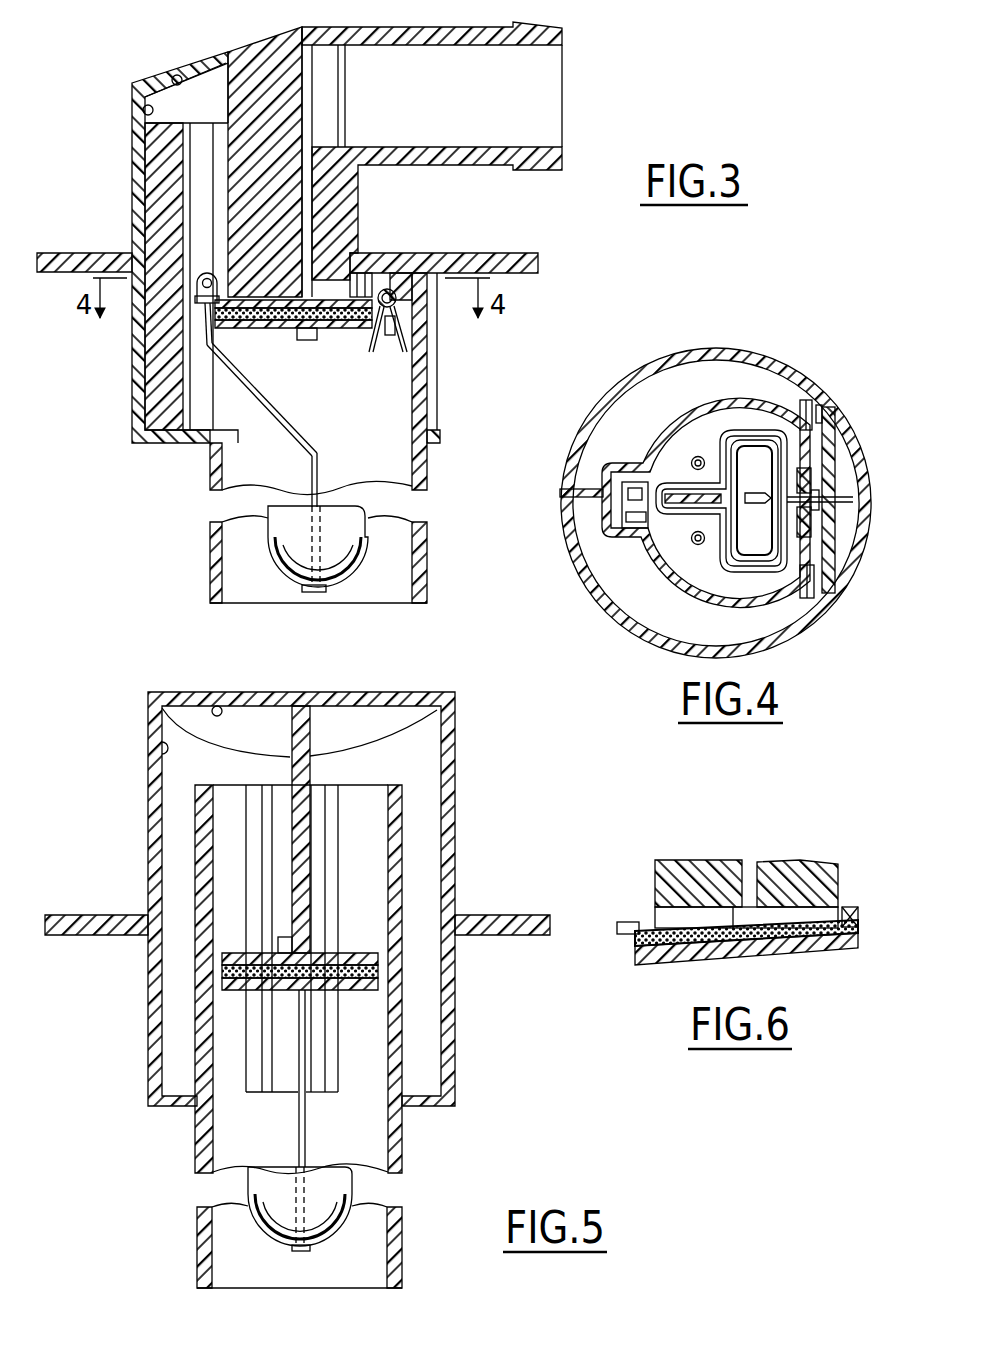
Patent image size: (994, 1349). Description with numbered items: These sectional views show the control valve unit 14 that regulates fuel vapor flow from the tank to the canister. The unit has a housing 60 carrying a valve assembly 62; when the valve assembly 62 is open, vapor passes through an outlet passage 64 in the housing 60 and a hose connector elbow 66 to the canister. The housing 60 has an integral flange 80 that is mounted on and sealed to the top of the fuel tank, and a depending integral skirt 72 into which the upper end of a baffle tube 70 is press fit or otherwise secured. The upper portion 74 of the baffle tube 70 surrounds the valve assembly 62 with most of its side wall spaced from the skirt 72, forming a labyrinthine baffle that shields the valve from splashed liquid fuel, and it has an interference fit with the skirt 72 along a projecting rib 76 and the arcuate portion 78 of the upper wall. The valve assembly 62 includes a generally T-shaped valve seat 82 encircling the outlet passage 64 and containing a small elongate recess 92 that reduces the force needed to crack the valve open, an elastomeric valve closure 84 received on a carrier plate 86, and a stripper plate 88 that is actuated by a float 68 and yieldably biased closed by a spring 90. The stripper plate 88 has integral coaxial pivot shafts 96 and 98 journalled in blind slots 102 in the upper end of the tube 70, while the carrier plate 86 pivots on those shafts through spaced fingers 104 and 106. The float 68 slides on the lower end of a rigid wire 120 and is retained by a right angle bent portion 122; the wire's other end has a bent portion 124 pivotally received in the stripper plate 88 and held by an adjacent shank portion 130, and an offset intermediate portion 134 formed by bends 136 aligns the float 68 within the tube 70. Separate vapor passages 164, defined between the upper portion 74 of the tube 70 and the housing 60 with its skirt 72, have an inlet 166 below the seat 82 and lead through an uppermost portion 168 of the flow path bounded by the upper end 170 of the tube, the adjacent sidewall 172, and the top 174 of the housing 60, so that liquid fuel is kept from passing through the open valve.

In FIG. 3, the control valve unit 14 is at (100, 92).
In FIG. 3, the housing 60 is at (221, 52).
In FIG. 3, the valve assembly 62 is at (331, 365).
In FIG. 3, the outlet passage 64 is at (313, 213).
In FIG. 4, the outlet passage 64 is at (765, 440).
In FIG. 6, the outlet passage 64 is at (749, 868).
In FIG. 3, the hose connector elbow 66 is at (523, 170).
In FIG. 3, the float 68 is at (288, 575).
In FIG. 5, the float 68 is at (347, 1198).
In FIG. 3, the baffle tube 70 is at (428, 558).
In FIG. 5, the baffle tube 70 is at (409, 1136).
In FIG. 3, the depending integral skirt 72 is at (440, 410).
In FIG. 4, the upper portion of the baffle tube 74 is at (667, 434).
In FIG. 5, the upper portion of the baffle tube 74 is at (402, 878).
In FIG. 3, the projecting rib 76 is at (133, 200).
In FIG. 4, the projecting rib 76 is at (562, 493).
In FIG. 4, the arcuate portion of the upper wall 78 is at (838, 470).
In FIG. 3, the flange 80 is at (520, 257).
In FIG. 5, the flange 80 is at (80, 926).
In FIG. 4, the valve seat 82 is at (748, 430).
In FIG. 3, the elastomeric valve closure 84 is at (255, 328).
In FIG. 4, the elastomeric valve closure 84 is at (738, 543).
In FIG. 5, the elastomeric valve closure 84 is at (300, 957).
In FIG. 6, the elastomeric valve closure 84 is at (860, 935).
In FIG. 3, the carrier plate 86 is at (350, 333).
In FIG. 5, the carrier plate 86 is at (366, 991).
In FIG. 6, the carrier plate 86 is at (760, 952).
In FIG. 3, the stripper plate 88 is at (362, 280).
In FIG. 4, the stripper plate 88 is at (705, 565).
In FIG. 6, the stripper plate 88 is at (852, 907).
In FIG. 3, the spring 90 is at (406, 355).
In FIG. 4, the spring 90 is at (854, 498).
In FIG. 3, the recess 92 is at (252, 300).
In FIG. 6, the recess 92 is at (660, 905).
In FIG. 4, the pivot shaft 96 is at (822, 598).
In FIG. 4, the pivot shaft 98 is at (805, 440).
In FIG. 3, the blind slots 102 is at (393, 270).
In FIG. 4, the blind slots 102 is at (814, 412).
In FIG. 3, the finger 104 is at (375, 280).
In FIG. 4, the finger 104 is at (822, 452).
In FIG. 4, the finger 106 is at (836, 522).
In FIG. 3, the rigid wire 120 is at (320, 454).
In FIG. 5, the rigid wire 120 is at (296, 1121).
In FIG. 3, the right angle bent portion 122 is at (313, 590).
In FIG. 5, the right angle bent portion 122 is at (302, 1251).
In FIG. 4, the right angle bent portion 124 is at (622, 512).
In FIG. 3, the shank portion 130 is at (205, 330).
In FIG. 3, the offset intermediate portion 134 is at (290, 423).
In FIG. 3, the bends 136 is at (207, 353).
In FIG. 4, the passages 164 is at (677, 385).
In FIG. 5, the passages 164 is at (180, 858).
In FIG. 5, the inlet 166 is at (180, 1100).
In FIG. 3, the uppermost portion of the flow path 168 is at (163, 97).
In FIG. 5, the uppermost portion of the flow path 168 is at (207, 758).
In FIG. 3, the upper end of the upper portion of the tube 170 is at (208, 123).
In FIG. 5, the upper end of the upper portion of the tube 170 is at (367, 786).
In FIG. 3, the sidewall of the housing 172 is at (143, 110).
In FIG. 5, the sidewall of the housing 172 is at (168, 745).
In FIG. 3, the top of the housing 174 is at (177, 75).
In FIG. 5, the top of the housing 174 is at (216, 706).